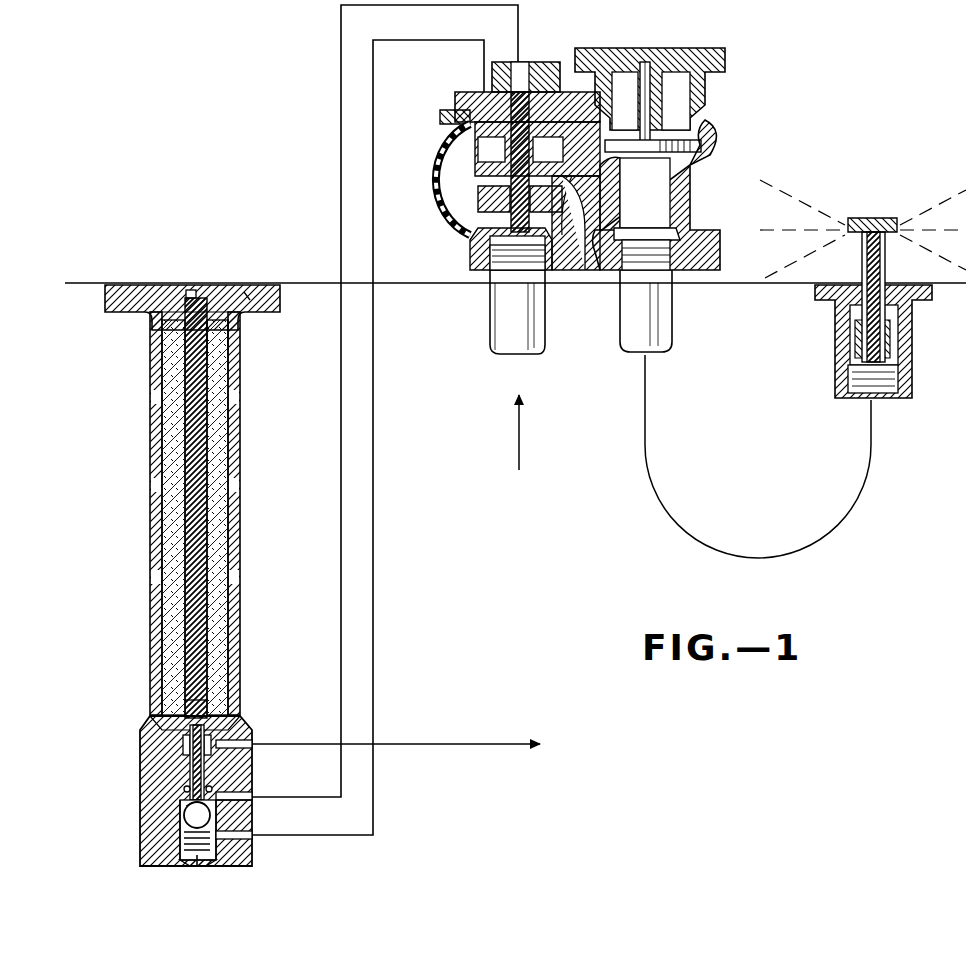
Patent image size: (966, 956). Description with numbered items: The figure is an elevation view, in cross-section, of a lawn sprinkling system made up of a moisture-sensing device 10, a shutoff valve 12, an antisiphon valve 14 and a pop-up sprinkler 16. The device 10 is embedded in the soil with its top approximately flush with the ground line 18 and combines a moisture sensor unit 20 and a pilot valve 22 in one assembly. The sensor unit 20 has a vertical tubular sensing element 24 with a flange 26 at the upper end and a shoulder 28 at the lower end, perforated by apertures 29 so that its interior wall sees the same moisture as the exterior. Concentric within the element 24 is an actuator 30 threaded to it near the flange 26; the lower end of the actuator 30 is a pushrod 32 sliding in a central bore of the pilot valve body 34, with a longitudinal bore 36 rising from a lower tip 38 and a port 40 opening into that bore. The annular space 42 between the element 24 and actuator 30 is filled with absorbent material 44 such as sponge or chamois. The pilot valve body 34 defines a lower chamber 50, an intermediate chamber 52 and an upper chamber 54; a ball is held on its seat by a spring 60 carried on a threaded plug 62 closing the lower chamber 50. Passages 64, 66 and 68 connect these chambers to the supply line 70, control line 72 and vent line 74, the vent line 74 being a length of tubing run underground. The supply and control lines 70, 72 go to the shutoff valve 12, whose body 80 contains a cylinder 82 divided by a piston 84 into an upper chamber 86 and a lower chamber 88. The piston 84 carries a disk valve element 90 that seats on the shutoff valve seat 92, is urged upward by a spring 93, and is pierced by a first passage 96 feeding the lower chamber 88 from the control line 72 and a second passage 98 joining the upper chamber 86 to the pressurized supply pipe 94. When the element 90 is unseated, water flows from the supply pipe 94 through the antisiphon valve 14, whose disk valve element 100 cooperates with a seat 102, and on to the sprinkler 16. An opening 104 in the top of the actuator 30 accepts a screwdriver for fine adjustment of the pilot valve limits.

The moisture-sensing device 10 is at (130, 421).
The shutoff valve 12 is at (440, 82).
The antisiphon valve 14 is at (752, 80).
The pop-up sprinkler 16 is at (895, 192).
The ground line 18 is at (288, 288).
The moisture sensor unit 20 is at (152, 550).
The pilot valve 22 is at (140, 774).
The tubular sensing element 24 is at (232, 453).
The flange 26 is at (250, 297).
The shoulder 28 is at (152, 730).
The apertures 29 is at (150, 395).
The actuator 30 is at (185, 518).
The pushrod 32 is at (185, 707).
The pilot valve body 34 is at (182, 840).
The longitudinal bore 36 is at (188, 790).
The lower tip 38 is at (180, 812).
The port 40 is at (200, 770).
The annular space 42 is at (224, 360).
The absorbent material 44 is at (232, 338).
The lower chamber 50 is at (182, 857).
The intermediate chamber 52 is at (252, 786).
The upper chamber 54 is at (183, 750).
The spring 60 is at (190, 866).
The threaded plug 62 is at (208, 868).
The passage 64 is at (232, 825).
The passage 66 is at (232, 804).
The passage 68 is at (245, 725).
The supply line 70 is at (308, 835).
The control line 72 is at (303, 797).
The vent line 74 is at (295, 744).
The valve body 80 is at (448, 208).
The cylinder 82 is at (480, 180).
The piston 84 is at (470, 126).
The upper chamber 86 is at (540, 92).
The lower chamber 88 is at (482, 147).
The disk valve element 90 is at (462, 236).
The shutoff valve seat 92 is at (480, 248).
The spring 93 is at (568, 158).
The supply pipe 94 is at (500, 322).
The first passage 96 is at (530, 78).
The second passage 98 is at (540, 205).
The disk valve element 100 is at (705, 142).
The seat 102 is at (690, 163).
The opening 104 is at (190, 290).